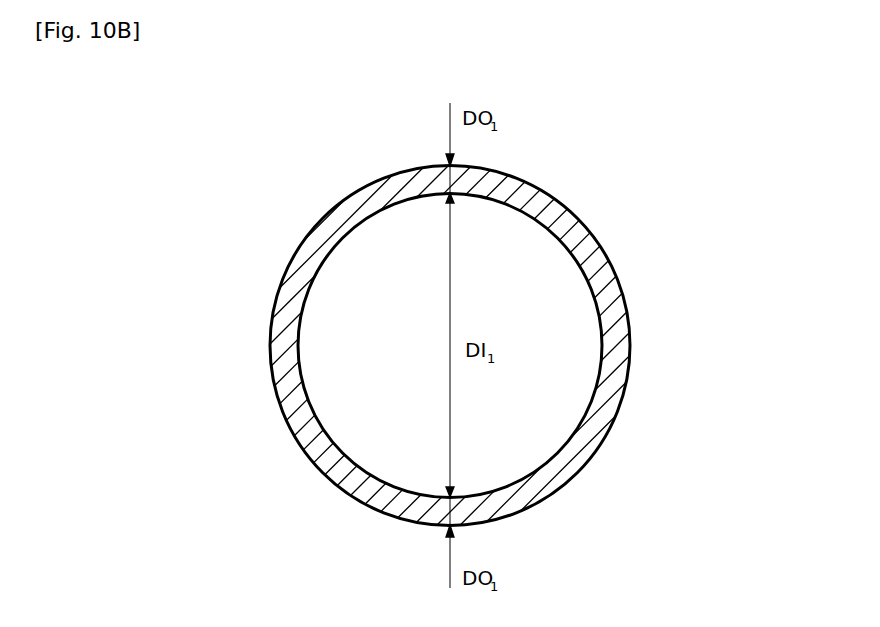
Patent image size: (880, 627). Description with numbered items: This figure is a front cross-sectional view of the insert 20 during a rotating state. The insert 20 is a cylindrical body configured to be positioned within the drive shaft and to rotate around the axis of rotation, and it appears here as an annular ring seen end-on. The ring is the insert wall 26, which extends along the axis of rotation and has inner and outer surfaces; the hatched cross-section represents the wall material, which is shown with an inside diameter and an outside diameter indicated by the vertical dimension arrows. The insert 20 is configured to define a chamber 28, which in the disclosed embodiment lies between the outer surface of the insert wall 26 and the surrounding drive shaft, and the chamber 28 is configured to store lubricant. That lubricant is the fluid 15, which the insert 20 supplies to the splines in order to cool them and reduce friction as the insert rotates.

The insert 20 is at (516, 374).
The insert wall 26 is at (633, 348).
The fluid 15 is at (553, 470).
The chamber 28 is at (331, 462).